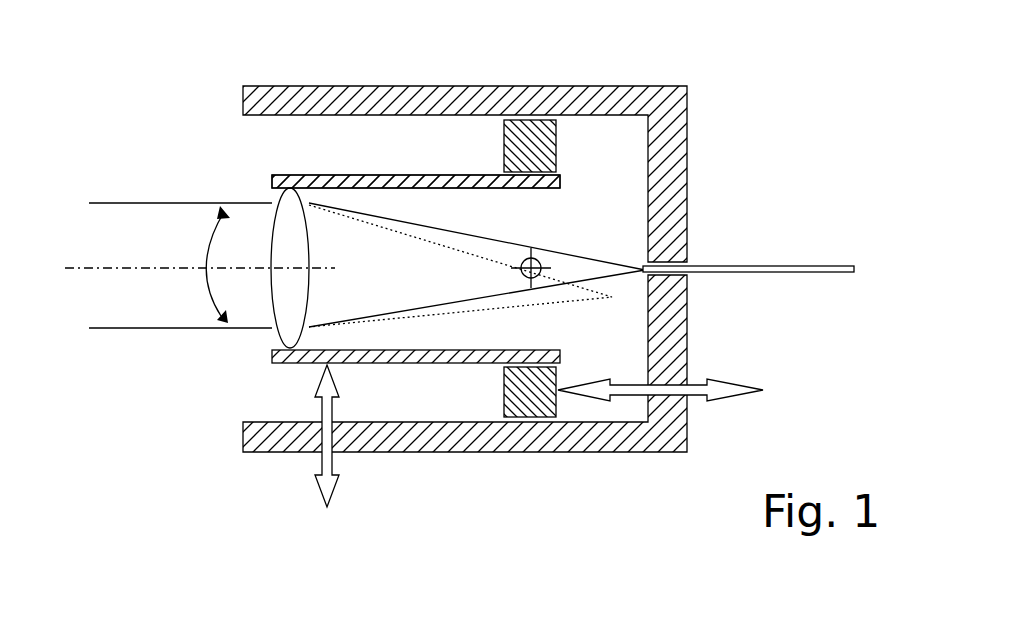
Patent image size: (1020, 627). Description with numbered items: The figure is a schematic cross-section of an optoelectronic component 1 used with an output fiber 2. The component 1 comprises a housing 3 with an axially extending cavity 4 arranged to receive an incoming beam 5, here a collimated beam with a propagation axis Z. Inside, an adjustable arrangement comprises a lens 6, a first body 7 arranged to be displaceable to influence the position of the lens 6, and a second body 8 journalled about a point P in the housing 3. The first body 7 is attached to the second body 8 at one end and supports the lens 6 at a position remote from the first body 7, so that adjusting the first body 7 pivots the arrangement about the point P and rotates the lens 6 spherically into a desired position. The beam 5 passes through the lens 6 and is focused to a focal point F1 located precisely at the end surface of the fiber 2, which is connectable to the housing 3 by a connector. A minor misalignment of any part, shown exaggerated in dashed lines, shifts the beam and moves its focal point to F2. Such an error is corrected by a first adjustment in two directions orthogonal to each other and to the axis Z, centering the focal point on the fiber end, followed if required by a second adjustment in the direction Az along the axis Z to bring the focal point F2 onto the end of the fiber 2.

The optoelectronic component 1 is at (733, 52).
The output fiber 2 is at (773, 262).
The housing 3 is at (688, 183).
The axially extending cavity 4 is at (384, 162).
The incoming beam 5 is at (162, 333).
The lens 6 is at (273, 213).
The first body 7 is at (308, 170).
The second body 8 is at (498, 145).
The pivot point P is at (548, 262).
The focal point F1 is at (646, 271).
The shifted focal point F2 is at (614, 298).
The propagation axis Z is at (97, 272).
The axial adjustment direction Az is at (711, 401).